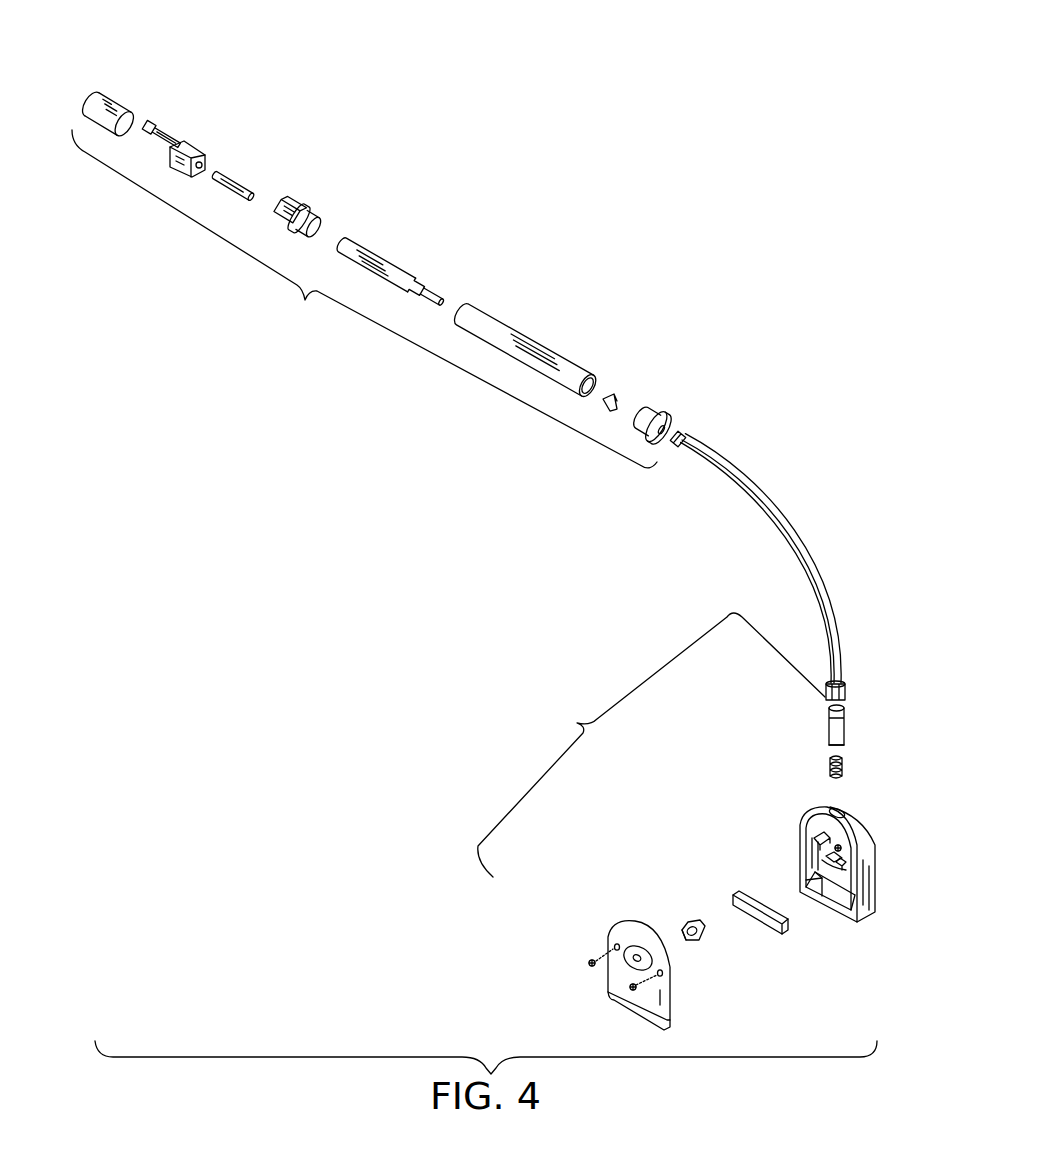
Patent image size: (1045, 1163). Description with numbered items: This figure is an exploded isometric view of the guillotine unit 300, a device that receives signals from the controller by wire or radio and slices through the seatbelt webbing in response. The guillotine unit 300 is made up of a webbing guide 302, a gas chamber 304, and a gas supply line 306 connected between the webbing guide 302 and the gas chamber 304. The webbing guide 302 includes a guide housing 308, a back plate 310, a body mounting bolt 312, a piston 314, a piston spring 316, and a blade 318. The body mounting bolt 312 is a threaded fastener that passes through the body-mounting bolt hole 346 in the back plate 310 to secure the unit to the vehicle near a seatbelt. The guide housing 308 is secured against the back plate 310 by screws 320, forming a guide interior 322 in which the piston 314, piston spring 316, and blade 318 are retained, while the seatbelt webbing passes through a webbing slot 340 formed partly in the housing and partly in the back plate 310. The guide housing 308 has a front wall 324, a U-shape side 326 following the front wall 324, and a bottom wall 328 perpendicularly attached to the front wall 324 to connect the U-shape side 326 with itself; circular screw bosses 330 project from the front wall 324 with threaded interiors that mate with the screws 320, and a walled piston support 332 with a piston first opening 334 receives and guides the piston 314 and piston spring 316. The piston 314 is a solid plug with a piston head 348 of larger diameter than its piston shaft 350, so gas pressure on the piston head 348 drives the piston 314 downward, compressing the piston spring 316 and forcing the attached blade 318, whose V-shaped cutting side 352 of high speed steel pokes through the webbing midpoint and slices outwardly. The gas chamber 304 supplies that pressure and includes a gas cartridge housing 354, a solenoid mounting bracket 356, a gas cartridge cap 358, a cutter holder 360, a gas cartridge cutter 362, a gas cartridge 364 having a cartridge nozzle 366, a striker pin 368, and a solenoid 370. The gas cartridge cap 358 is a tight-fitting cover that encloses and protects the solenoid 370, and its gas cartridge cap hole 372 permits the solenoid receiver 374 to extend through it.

The guillotine unit 300 is at (688, 182).
The webbing guide 302 is at (651, 745).
The gas chamber 304 is at (364, 299).
The gas supply line 306 is at (720, 455).
The guide housing 308 is at (857, 843).
The back plate 310 is at (606, 940).
The body mounting bolt 312 is at (603, 933).
The piston 314 is at (830, 723).
The piston spring 316 is at (828, 770).
The blade 318 is at (688, 921).
The screw 320 is at (593, 965).
The guide interior 322 is at (786, 881).
The front wall 324 is at (830, 865).
The U-shape side 326 is at (803, 815).
The bottom wall 328 is at (827, 910).
The screw boss 330 is at (826, 842).
The piston support 332 is at (838, 850).
The piston first opening 334 is at (833, 810).
The webbing slot 340 is at (631, 1007).
The body-mounting bolt hole 346 is at (613, 947).
The piston head 348 is at (823, 695).
The piston shaft 350 is at (843, 727).
The V-shaped cutting side 352 is at (750, 927).
The gas cartridge housing 354 is at (537, 337).
The solenoid mounting bracket 356 is at (325, 215).
The gas cartridge cap 358 is at (122, 103).
The cutter holder 360 is at (670, 415).
The gas cartridge cutter 362 is at (617, 397).
The gas cartridge 364 is at (393, 257).
The cartridge nozzle 366 is at (443, 297).
The striker pin 368 is at (247, 186).
The solenoid 370 is at (197, 150).
The gas cartridge cap hole 372 is at (88, 76).
The solenoid receiver 374 is at (175, 131).